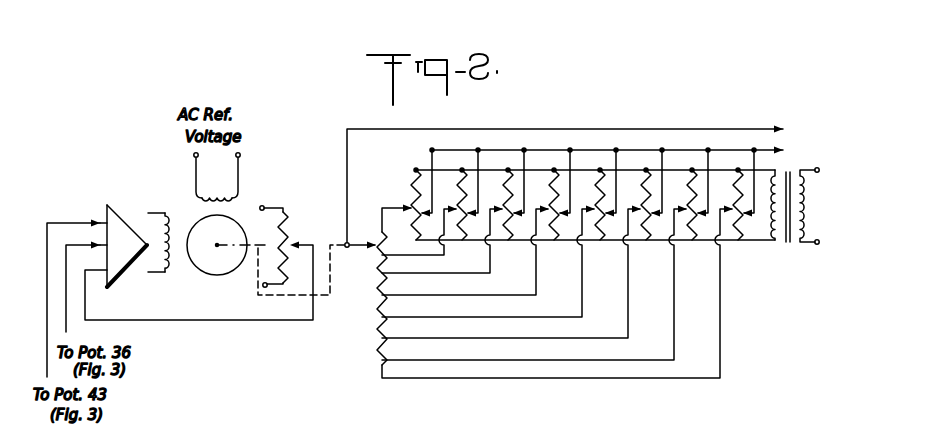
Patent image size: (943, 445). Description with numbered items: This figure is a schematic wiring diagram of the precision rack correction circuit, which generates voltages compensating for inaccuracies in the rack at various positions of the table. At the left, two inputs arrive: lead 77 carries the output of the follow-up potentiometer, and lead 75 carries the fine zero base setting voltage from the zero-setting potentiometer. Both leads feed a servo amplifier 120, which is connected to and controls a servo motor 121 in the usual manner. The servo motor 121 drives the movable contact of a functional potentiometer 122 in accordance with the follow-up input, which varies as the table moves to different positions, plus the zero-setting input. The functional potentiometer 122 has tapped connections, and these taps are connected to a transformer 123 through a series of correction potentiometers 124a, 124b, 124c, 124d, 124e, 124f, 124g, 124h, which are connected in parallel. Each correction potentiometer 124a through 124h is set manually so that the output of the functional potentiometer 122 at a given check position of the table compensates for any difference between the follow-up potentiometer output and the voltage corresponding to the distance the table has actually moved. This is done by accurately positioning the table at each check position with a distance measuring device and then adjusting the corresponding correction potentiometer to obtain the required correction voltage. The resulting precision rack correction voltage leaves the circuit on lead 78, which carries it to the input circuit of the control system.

The lead 77 is at (47, 229).
The lead 75 is at (66, 330).
The servo amplifier 120 is at (111, 211).
The servo motor 121 is at (238, 222).
The functional potentiometer 122 is at (371, 273).
The correction potentiometer 124a is at (413, 186).
The correction potentiometer 124b is at (458, 183).
The correction potentiometer 124c is at (504, 183).
The correction potentiometer 124d is at (550, 183).
The correction potentiometer 124e is at (596, 183).
The correction potentiometer 124f is at (642, 183).
The correction potentiometer 124g is at (688, 183).
The correction potentiometer 124h is at (734, 183).
The lead 78 is at (670, 129).
The transformer 123 is at (792, 249).